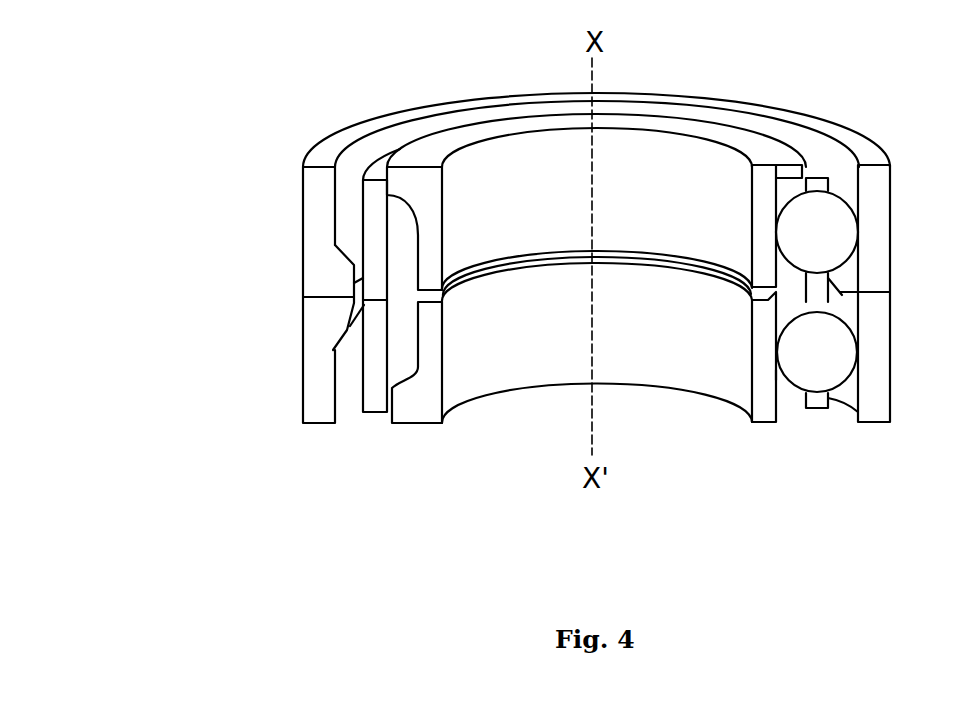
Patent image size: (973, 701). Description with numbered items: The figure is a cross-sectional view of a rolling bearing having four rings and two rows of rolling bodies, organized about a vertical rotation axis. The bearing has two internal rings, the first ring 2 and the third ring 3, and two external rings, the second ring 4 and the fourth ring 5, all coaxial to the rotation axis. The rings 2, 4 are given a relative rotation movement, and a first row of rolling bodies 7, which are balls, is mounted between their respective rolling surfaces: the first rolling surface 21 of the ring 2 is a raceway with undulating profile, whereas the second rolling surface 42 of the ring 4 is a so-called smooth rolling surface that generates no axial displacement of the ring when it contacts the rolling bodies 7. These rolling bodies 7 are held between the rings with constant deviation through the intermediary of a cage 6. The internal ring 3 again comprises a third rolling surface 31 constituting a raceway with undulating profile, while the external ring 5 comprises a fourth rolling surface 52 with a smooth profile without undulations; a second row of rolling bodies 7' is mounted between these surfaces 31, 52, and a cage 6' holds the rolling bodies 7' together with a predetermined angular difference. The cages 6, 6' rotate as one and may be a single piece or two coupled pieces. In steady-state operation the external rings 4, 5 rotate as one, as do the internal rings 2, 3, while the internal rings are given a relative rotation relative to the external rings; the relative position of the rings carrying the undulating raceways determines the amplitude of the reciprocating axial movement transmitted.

The first ring 2 is at (765, 185).
The first rolling surface 21 is at (785, 203).
The third ring 3 is at (788, 400).
The third rolling surface 31 is at (780, 375).
The second ring 4 is at (320, 267).
The second rolling surface 42 is at (337, 247).
The fourth ring 5 is at (320, 325).
The fourth rolling surface 52 is at (333, 348).
The cage 6 is at (334, 161).
The cage 6' is at (358, 434).
The rolling bodies 7 is at (862, 232).
The rolling bodies 7' is at (872, 354).